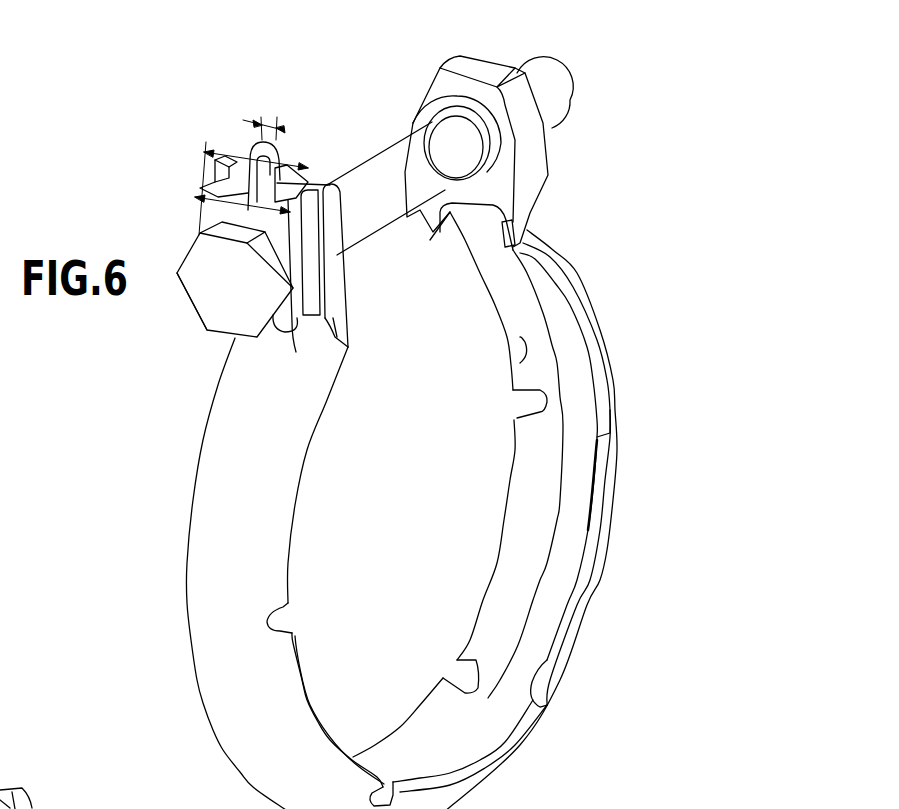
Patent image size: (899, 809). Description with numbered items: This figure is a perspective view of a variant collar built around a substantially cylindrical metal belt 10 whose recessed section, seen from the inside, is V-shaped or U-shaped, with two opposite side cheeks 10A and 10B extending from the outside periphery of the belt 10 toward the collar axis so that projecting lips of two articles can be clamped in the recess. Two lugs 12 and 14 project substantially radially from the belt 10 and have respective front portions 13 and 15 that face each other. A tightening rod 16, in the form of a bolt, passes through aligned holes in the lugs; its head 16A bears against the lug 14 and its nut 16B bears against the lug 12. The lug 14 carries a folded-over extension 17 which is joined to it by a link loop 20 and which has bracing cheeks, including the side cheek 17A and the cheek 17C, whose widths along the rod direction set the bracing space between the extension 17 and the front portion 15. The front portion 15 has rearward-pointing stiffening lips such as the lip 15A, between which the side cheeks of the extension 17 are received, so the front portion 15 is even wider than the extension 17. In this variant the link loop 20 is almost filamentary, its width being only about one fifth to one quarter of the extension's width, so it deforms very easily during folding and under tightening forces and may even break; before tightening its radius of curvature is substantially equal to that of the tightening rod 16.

The belt 10 is at (604, 287).
The side cheek 10A is at (598, 338).
The side cheek 10B is at (520, 363).
The lug 12 is at (339, 417).
The front portion 13 is at (507, 152).
The lug 14 is at (245, 144).
The front portion 15 is at (357, 221).
The stiffening lip 15A is at (330, 224).
The tightening rod 16 is at (475, 156).
The head 16A is at (222, 313).
The nut 16B is at (540, 107).
The extension 17 is at (187, 512).
The bracing cheek 17A is at (307, 285).
The bracing cheek 17C is at (288, 326).
The link loop 20 is at (260, 140).